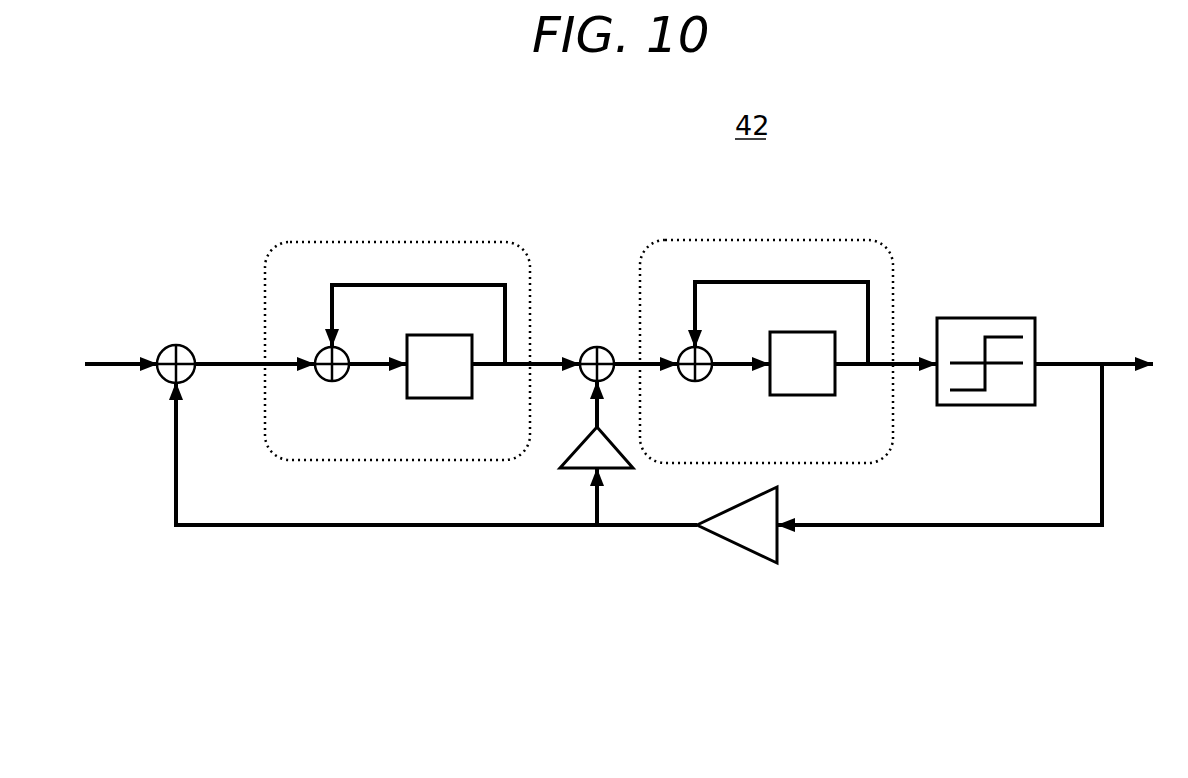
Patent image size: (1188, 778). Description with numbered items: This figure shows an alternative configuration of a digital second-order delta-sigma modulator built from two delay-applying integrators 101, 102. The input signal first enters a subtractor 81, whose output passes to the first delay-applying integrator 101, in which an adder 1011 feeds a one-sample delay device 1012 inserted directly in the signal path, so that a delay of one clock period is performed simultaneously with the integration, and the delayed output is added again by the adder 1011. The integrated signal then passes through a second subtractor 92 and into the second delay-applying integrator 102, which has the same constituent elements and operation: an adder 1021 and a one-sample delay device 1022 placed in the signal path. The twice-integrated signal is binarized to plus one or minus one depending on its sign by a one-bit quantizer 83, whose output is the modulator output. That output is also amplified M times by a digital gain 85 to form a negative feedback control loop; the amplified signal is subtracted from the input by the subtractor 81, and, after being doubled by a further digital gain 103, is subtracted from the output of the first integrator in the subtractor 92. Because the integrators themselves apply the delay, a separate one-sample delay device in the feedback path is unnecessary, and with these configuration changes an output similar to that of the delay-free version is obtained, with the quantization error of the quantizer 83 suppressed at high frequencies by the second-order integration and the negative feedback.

The subtractor 81 is at (178, 346).
The one-bit quantizer (encoder) 83 is at (982, 318).
The digital gain 85 is at (735, 545).
The subtractor 92 is at (600, 348).
The delay-applying integrator 101 is at (400, 240).
The delay-applying integrator 102 is at (774, 240).
The digital gain 103 is at (565, 452).
The adder 1011 is at (333, 383).
The one-sample delay device 1012 is at (437, 398).
The adder 1021 is at (696, 383).
The one-sample delay device 1022 is at (800, 395).